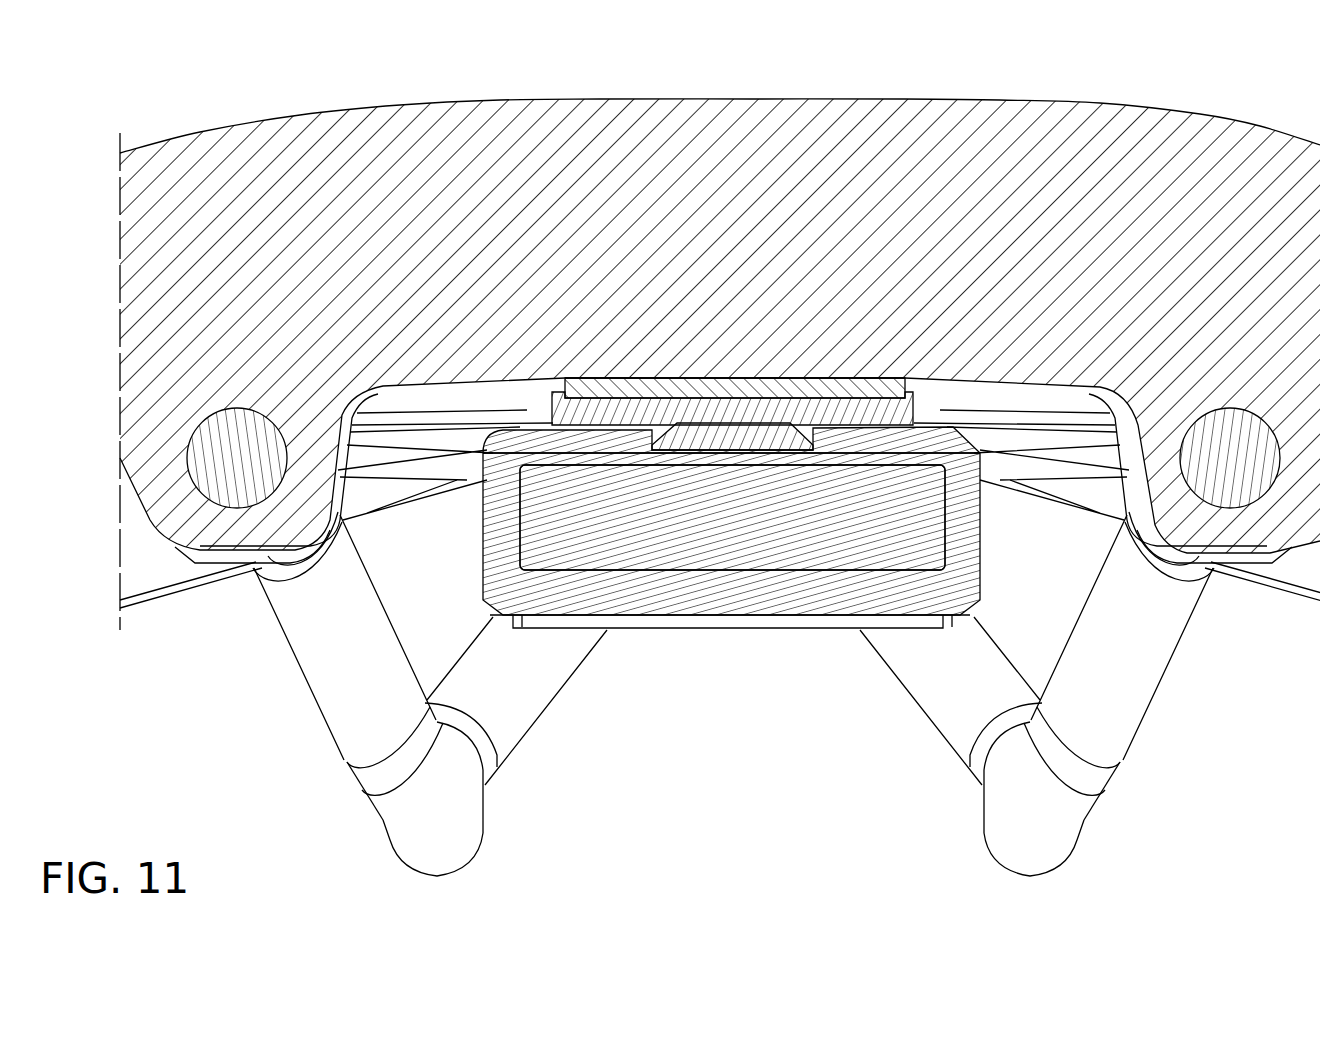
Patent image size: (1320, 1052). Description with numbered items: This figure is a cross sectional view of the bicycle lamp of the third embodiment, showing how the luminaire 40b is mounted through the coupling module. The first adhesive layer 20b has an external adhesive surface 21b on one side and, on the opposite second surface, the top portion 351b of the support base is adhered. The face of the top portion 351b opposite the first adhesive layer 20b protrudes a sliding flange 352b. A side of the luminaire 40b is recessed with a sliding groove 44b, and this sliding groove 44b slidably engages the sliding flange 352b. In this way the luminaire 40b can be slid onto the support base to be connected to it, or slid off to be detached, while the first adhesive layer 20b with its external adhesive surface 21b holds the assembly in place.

The first adhesive layer 20b is at (640, 390).
The sliding groove 44b is at (712, 440).
The external adhesive surface 21b is at (797, 383).
The luminaire 40b is at (688, 600).
The sliding flange 352b is at (767, 433).
The top portion 351b is at (850, 407).